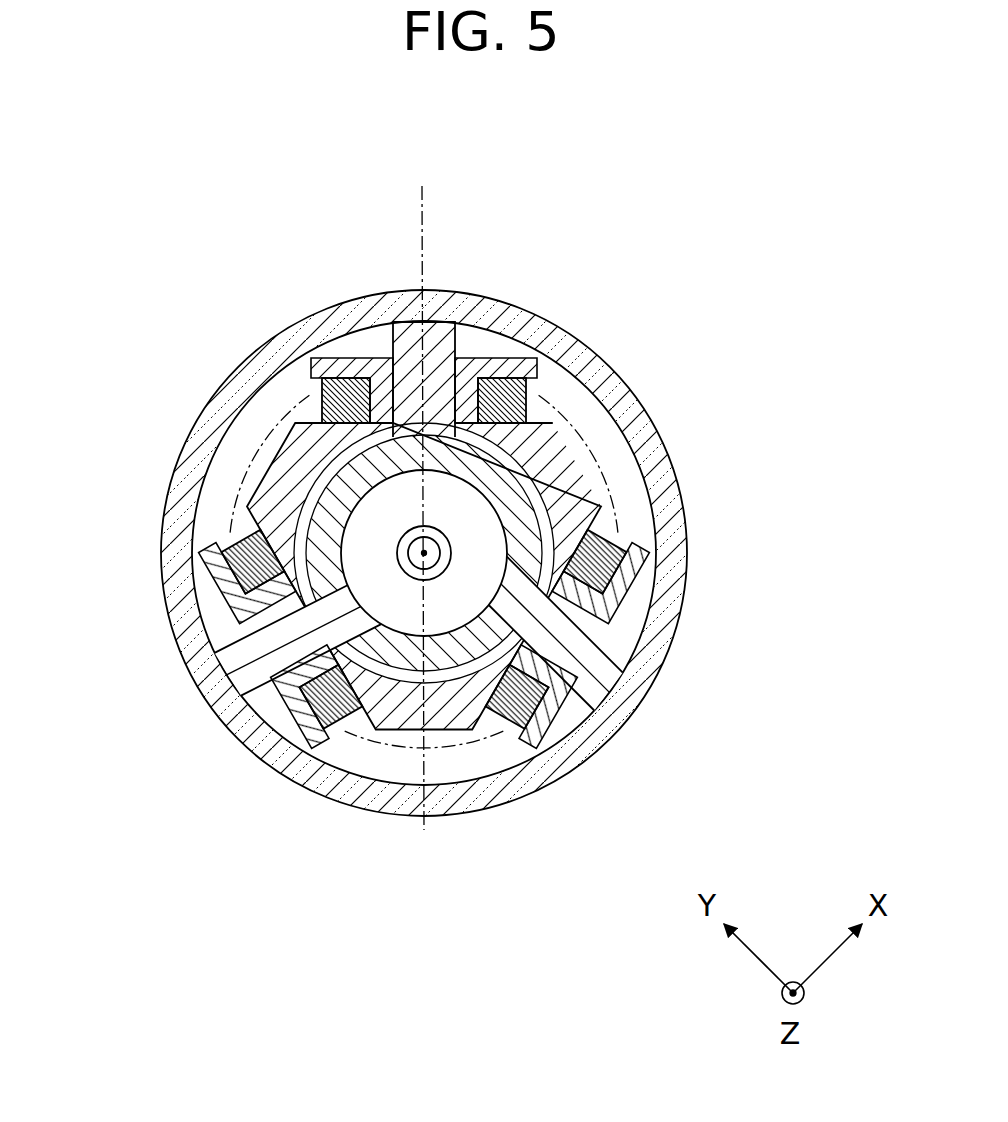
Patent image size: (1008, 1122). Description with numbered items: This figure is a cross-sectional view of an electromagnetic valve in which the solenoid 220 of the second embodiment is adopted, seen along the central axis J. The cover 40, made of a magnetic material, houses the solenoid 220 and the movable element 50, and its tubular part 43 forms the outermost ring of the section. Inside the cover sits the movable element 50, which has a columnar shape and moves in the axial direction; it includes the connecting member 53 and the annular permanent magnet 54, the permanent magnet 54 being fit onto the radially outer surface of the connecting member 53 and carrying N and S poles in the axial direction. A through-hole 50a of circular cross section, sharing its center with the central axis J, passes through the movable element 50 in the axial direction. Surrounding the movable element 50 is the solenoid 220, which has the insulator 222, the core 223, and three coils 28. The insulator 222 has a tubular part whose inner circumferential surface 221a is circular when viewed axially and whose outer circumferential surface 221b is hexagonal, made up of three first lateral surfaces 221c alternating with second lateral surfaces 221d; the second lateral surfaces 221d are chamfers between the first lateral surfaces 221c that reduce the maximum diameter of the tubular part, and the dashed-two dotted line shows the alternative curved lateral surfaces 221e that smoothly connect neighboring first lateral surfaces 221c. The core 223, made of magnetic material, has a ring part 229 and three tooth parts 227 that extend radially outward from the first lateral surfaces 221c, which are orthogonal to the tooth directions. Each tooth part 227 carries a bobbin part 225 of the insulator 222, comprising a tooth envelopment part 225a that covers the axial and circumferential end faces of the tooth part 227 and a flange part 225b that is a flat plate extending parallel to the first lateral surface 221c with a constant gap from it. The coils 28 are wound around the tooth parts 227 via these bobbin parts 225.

The cover 40 is at (625, 365).
The tubular part 43 is at (625, 398).
The solenoid 220 is at (550, 390).
The inner circumferential surface 221a is at (585, 622).
The outer circumferential surface 221b is at (577, 422).
The first lateral surface 221c is at (608, 520).
The second lateral surface 221d is at (612, 490).
The curved lateral surface 221e is at (607, 428).
The insulator 222 is at (492, 352).
The core 223 is at (442, 318).
The bobbin part 225 is at (330, 352).
The tooth envelopment part 225a is at (605, 597).
The flange part 225b is at (636, 556).
The tooth part 227 is at (404, 338).
The ring part 229 is at (343, 487).
The coil 28 is at (330, 403).
The movable element 50 is at (340, 586).
The through-hole 50a is at (427, 570).
The connecting member 53 is at (355, 635).
The permanent magnet 54 is at (372, 598).
The central axis J is at (419, 490).